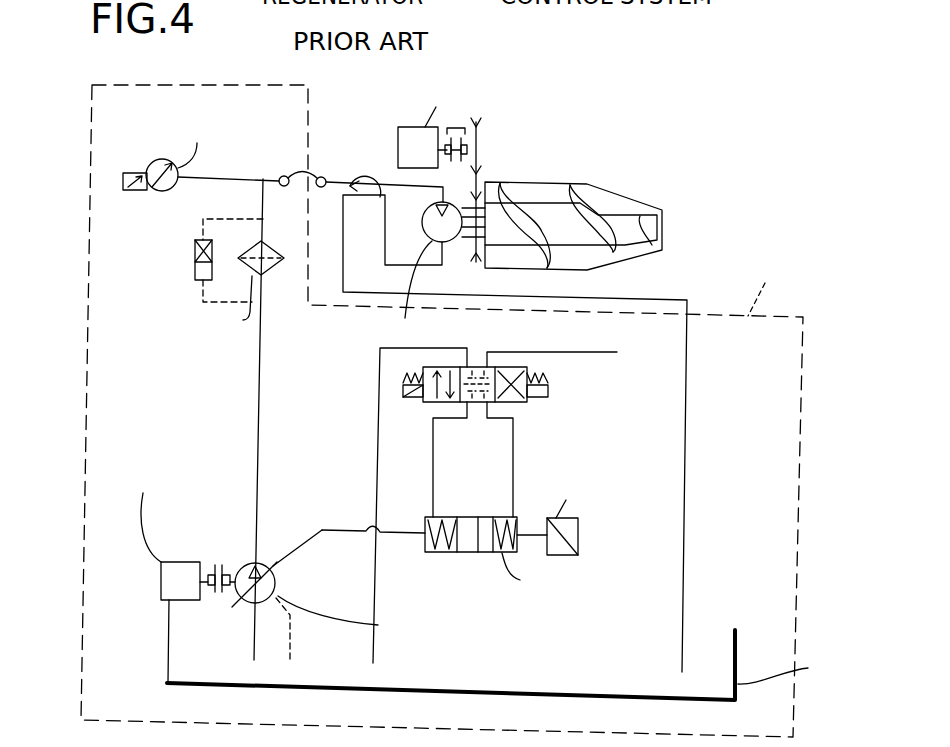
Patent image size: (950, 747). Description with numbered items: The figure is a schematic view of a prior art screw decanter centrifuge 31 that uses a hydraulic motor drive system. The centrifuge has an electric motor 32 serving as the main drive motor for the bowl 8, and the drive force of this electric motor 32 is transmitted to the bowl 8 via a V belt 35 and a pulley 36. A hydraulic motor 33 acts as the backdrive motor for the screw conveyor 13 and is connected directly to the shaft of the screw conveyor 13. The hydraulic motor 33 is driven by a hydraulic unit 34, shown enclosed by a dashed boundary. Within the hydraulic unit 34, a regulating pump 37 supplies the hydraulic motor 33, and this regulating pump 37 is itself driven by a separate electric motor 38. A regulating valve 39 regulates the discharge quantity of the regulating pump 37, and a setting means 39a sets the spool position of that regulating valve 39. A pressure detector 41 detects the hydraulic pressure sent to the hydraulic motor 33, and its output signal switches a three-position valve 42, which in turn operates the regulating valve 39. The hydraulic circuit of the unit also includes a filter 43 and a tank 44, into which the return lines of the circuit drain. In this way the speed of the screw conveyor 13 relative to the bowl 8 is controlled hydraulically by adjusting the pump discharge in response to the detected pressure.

The bowl 8 is at (538, 183).
The screw conveyor 13 is at (631, 228).
The screw decanter centrifuge 31 is at (573, 190).
The electric motor 32 is at (399, 140).
The hydraulic motor 33 is at (450, 242).
The hydraulic unit 34 is at (86, 419).
The V belt 35 is at (481, 177).
The pulley 36 is at (478, 248).
The regulating pump 37 is at (277, 584).
The electric motor 38 is at (181, 562).
The regulating valve 39 is at (470, 553).
The setting means 39a is at (581, 538).
The pressure detector 41 is at (164, 160).
The three-position valve 42 is at (447, 367).
The filter 43 is at (276, 275).
The tank 44 is at (738, 667).